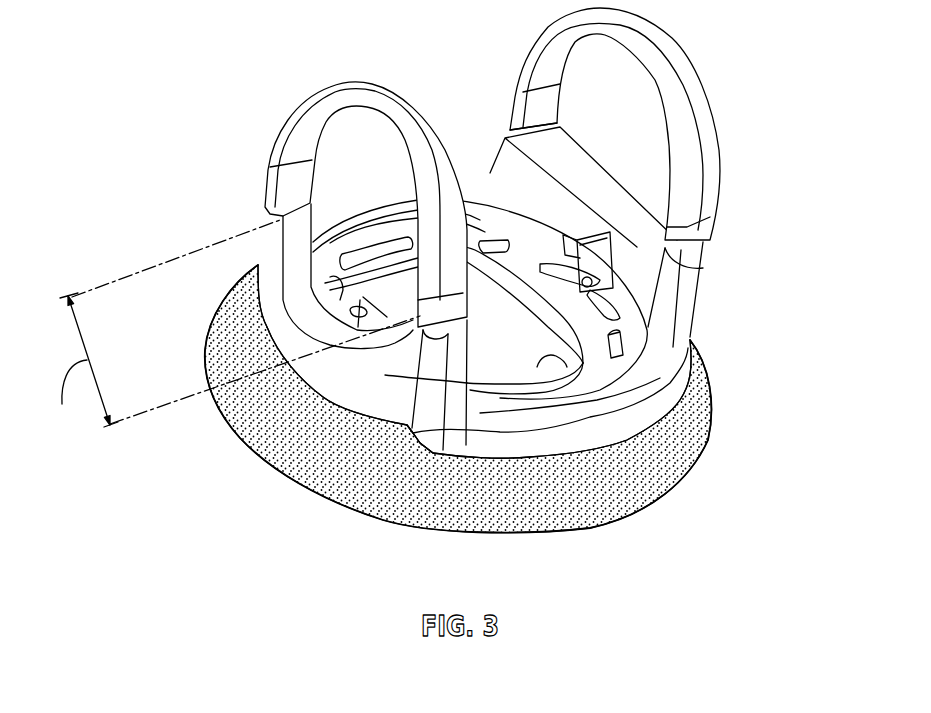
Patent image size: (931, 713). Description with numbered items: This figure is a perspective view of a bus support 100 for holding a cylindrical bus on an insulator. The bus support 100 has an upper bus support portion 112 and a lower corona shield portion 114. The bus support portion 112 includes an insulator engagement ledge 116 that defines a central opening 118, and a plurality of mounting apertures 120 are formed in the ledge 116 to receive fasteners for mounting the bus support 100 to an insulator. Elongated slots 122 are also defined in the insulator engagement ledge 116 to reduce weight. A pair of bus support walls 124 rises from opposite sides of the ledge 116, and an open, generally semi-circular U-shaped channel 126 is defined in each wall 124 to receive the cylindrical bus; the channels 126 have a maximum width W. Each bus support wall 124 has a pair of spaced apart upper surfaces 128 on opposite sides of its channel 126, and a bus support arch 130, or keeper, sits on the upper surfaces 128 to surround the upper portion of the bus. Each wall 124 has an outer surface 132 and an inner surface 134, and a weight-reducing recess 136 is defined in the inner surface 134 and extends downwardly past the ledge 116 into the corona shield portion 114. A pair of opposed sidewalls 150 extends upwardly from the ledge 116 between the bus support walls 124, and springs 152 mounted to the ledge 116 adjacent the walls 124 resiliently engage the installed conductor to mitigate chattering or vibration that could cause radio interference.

The bus support 100 is at (186, 60).
The bus support portion 112 is at (637, 387).
The corona shield portion 114 is at (698, 481).
The insulator engagement ledge 116 is at (490, 362).
The central opening 118 is at (560, 365).
The mounting apertures 120 is at (497, 240).
The elongated slots 122 is at (362, 253).
The bus support walls 124 is at (347, 386).
The channel 126 is at (300, 293).
The upper surfaces 128 is at (377, 347).
The bus support arch 130 is at (343, 74).
The outer surface 132 is at (310, 367).
The inner surface 134 is at (557, 190).
The recess 136 is at (535, 229).
The sidewalls 150 is at (597, 390).
The springs 152 is at (565, 240).